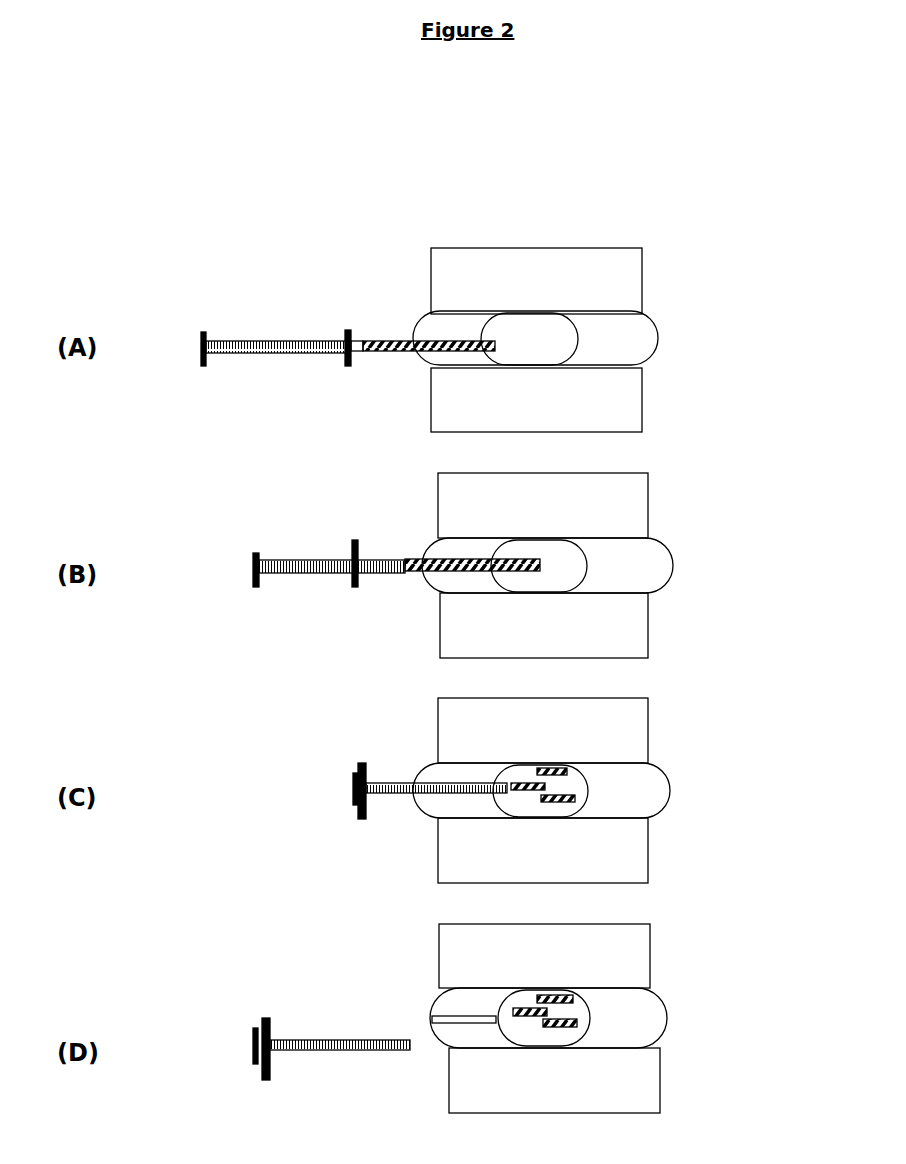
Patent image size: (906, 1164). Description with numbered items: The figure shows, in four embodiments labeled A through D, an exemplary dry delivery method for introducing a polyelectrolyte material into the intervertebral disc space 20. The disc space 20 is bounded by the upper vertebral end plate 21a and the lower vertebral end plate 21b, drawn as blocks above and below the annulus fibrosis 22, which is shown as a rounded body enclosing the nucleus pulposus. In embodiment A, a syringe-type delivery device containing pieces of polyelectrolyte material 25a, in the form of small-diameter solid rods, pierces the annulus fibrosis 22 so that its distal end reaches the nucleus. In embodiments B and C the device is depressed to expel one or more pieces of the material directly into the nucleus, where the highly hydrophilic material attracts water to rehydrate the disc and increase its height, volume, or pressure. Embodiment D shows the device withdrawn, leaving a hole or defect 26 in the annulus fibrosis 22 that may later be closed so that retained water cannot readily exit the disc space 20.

The intervertebral disc space 20 is at (578, 291).
The upper vertebral end plate 21a is at (650, 265).
The lower vertebral end plate 21b is at (652, 425).
The annulus fibrosis 22 is at (668, 337).
The pieces of polyelectrolyte material 25a is at (383, 360).
The hole or defect 26 is at (429, 1018).